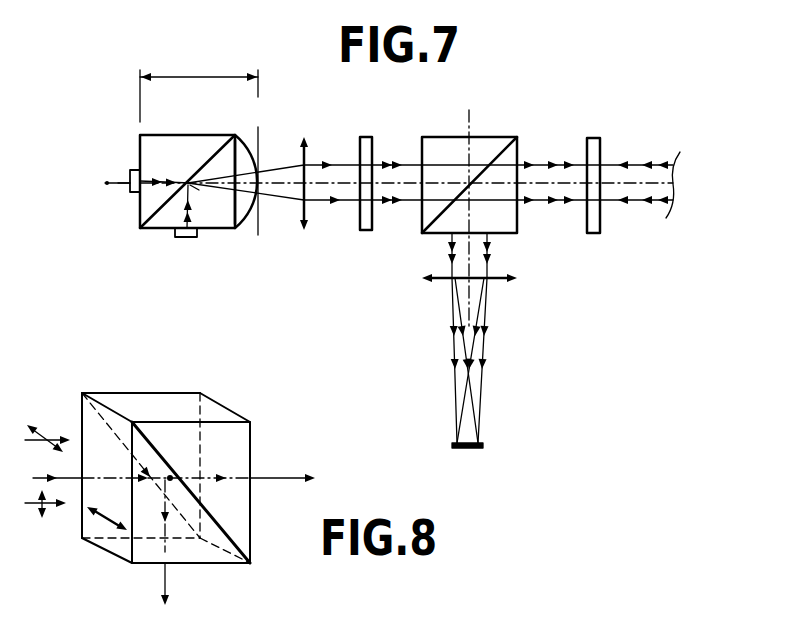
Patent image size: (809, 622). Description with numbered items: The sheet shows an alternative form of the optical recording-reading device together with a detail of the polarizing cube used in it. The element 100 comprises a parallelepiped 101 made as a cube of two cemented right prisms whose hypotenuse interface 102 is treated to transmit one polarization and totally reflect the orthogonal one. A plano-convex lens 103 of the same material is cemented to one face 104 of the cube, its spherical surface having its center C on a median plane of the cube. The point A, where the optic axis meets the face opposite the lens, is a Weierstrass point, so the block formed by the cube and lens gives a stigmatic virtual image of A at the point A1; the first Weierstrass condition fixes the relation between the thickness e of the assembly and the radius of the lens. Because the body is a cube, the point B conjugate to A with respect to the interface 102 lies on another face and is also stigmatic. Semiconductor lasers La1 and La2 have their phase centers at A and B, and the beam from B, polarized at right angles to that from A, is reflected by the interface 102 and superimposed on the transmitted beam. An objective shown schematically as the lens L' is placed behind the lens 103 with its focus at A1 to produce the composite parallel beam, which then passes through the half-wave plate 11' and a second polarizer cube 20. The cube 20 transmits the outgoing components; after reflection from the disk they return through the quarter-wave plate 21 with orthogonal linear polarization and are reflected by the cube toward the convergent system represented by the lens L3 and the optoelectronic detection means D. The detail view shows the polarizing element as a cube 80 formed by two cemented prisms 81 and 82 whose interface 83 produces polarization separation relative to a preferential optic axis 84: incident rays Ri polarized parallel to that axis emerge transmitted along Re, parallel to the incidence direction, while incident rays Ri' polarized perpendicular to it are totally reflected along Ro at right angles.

In FIG. 7, the element 100 is at (250, 300).
In FIG. 7, the parallelepiped 101 is at (152, 133).
In FIG. 7, the interface 102 is at (214, 155).
In FIG. 7, the plano-convex lens 103 is at (252, 158).
In FIG. 7, the face 104 is at (245, 222).
In FIG. 7, the semiconductor laser La1 is at (130, 172).
In FIG. 7, the semiconductor laser La2 is at (183, 238).
In FIG. 7, the point A is at (134, 195).
In FIG. 7, the point A1 is at (118, 190).
In FIG. 7, the point B is at (178, 230).
In FIG. 7, the center C is at (199, 192).
In FIG. 7, the thickness e is at (199, 144).
In FIG. 7, the lens L' is at (288, 183).
In FIG. 7, the half-wave plate 11' is at (477, 166).
In FIG. 7, the cube 20 is at (460, 137).
In FIG. 7, the quarter-wave plate 21 is at (600, 224).
In FIG. 7, the lens L3 is at (505, 280).
In FIG. 7, the optoelectronic detection means D is at (483, 441).
In FIG. 8, the cube 80 is at (250, 426).
In FIG. 8, the prism 81 is at (242, 535).
In FIG. 8, the prism 82 is at (210, 555).
In FIG. 8, the interface 83 is at (222, 521).
In FIG. 8, the preferential optic axis 84 is at (101, 521).
In FIG. 8, the incident rays Ri is at (53, 440).
In FIG. 8, the incident rays Ri' is at (50, 518).
In FIG. 8, the direction of emergence Re is at (257, 478).
In FIG. 8, the direction of emergence Ro is at (168, 585).